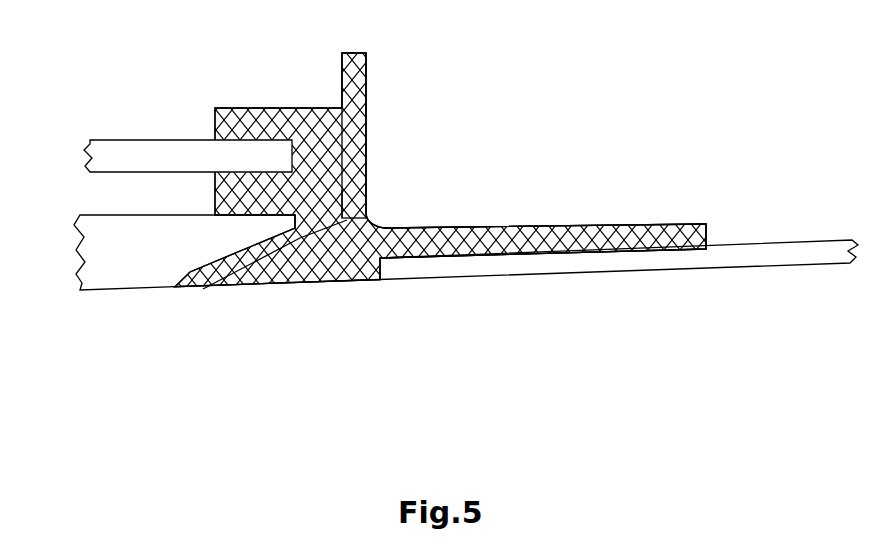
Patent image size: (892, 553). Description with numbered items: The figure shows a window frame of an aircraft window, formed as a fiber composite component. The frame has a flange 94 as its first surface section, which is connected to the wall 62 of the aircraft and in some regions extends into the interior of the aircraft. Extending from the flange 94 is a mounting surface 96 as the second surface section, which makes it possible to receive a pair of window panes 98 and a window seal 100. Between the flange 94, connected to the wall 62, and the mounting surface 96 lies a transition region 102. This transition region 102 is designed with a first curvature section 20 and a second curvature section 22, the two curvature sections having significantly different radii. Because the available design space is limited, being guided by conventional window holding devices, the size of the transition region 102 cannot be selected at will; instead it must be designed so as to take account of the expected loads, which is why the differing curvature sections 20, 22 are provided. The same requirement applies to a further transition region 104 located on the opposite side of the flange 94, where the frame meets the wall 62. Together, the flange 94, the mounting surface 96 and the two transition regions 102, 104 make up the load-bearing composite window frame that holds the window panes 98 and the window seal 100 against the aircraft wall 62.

The first curvature section 20 is at (373, 245).
The second curvature section 22 is at (358, 219).
The wall 62 is at (737, 257).
The flange 94 is at (300, 279).
The mounting surface 96 is at (329, 88).
The pair of window panes 98 is at (65, 147).
The window seal 100 is at (240, 123).
The transition region 102 is at (331, 208).
The transition region 104 is at (417, 222).